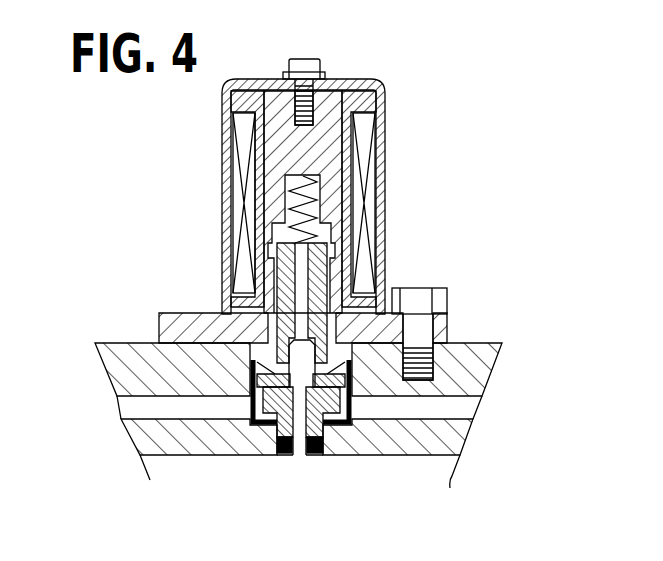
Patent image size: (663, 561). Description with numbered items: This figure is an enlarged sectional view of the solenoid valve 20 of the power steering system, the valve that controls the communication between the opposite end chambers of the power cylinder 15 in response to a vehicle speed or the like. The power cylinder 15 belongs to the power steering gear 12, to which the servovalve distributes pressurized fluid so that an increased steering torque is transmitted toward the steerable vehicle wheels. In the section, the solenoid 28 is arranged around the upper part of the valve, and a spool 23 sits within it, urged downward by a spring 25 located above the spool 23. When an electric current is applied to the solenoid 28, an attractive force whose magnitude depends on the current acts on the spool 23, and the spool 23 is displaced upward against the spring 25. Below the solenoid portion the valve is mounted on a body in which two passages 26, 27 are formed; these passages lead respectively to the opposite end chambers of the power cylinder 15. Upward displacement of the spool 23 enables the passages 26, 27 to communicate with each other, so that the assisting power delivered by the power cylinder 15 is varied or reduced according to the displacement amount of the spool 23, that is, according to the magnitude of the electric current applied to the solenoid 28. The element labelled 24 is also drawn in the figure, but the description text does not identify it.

The solenoid valve 20 is at (380, 77).
The solenoid 28 is at (242, 137).
The spring 25 is at (316, 203).
The spool 23 is at (287, 273).
The power steering gear 12 is at (143, 336).
The power cylinder 15 is at (123, 378).
The passage 26 is at (155, 412).
The valve stem insert 24 is at (280, 388).
The passage 27 is at (298, 448).